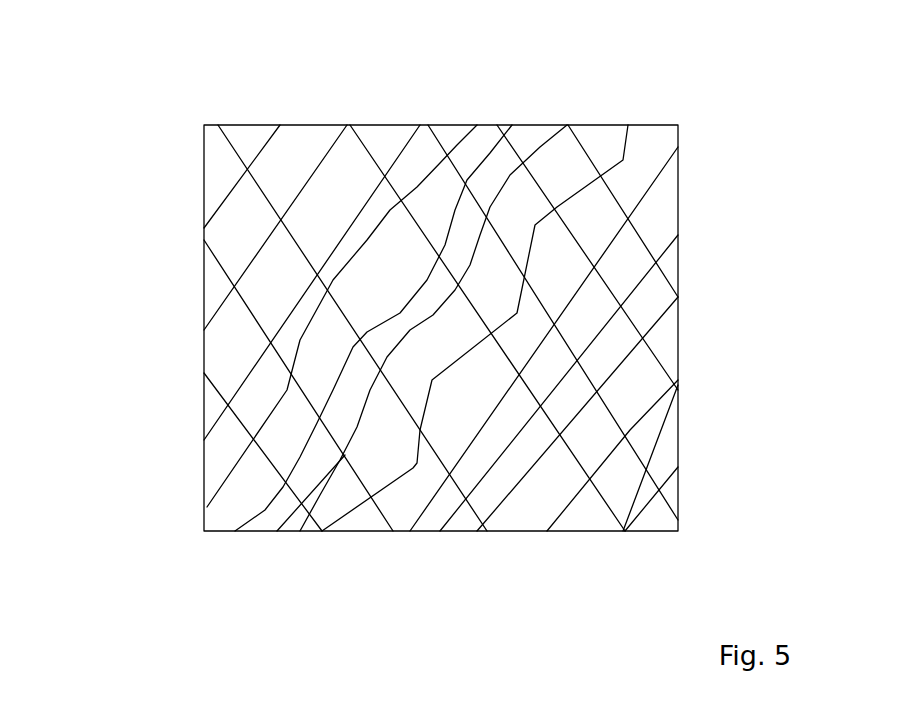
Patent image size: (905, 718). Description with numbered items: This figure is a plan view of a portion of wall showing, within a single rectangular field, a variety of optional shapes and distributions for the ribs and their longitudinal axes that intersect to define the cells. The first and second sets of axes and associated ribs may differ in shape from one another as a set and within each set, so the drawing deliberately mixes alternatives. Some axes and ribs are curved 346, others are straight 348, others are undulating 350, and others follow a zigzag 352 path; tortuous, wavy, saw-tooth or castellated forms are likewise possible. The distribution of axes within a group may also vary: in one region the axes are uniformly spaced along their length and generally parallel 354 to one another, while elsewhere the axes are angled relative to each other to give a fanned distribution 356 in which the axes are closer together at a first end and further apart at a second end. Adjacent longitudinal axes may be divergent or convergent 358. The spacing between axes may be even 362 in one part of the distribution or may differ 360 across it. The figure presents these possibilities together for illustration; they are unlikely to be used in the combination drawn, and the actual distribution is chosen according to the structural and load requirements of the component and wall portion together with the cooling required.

The curved axes and ribs 346 is at (233, 455).
The straight axes and ribs 348 is at (215, 413).
The undulating axes and ribs 350 is at (275, 485).
The zigzag axes and ribs 352 is at (357, 513).
The parallel axes 354 is at (265, 143).
The fanned distribution 356 is at (483, 480).
The divergent or convergent axes 358 is at (637, 408).
The differing spacing of axes 360 is at (225, 353).
The even spacing of axes 362 is at (440, 137).